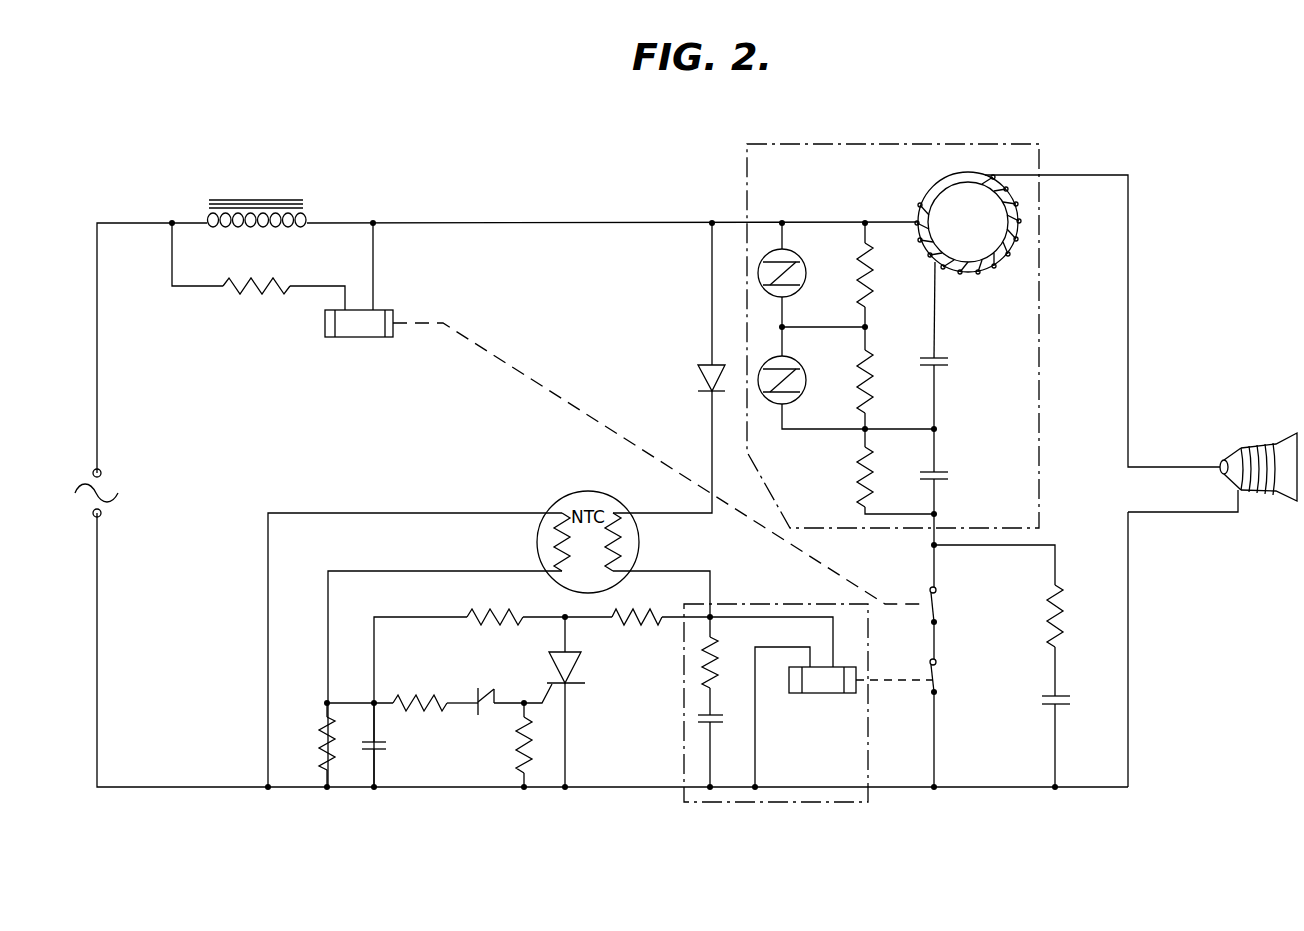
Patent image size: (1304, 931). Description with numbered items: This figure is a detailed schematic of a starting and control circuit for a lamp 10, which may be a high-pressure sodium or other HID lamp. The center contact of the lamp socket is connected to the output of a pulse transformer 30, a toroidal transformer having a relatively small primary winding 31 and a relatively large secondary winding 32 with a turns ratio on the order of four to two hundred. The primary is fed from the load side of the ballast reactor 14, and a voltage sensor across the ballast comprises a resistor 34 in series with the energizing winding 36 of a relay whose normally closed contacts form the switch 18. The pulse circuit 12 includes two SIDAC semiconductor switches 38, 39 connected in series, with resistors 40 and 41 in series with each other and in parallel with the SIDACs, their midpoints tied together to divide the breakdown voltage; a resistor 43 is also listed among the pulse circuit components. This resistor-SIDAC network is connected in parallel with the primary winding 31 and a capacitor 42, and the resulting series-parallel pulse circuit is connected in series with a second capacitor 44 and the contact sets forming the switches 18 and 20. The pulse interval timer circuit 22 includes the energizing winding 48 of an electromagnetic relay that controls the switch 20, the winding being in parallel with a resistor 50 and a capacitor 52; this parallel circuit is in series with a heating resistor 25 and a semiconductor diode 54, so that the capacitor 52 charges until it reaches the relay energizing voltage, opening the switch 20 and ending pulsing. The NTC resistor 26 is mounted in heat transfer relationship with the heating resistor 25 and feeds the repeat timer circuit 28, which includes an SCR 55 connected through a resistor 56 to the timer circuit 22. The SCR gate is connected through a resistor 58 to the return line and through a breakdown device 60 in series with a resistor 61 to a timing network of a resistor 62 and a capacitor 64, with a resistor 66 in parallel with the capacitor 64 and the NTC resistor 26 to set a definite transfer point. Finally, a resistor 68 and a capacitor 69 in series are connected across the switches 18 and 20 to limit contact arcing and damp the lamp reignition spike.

The lamp 10 is at (1275, 506).
The pulse circuit 12 is at (1042, 322).
The ballast reactor 14 is at (312, 213).
The switch 18 is at (946, 603).
The switch 20 is at (946, 673).
The pulse interval timer circuit 22 is at (712, 805).
The heating resistor 25 is at (622, 540).
The NTC resistor 26 is at (556, 550).
The repeat timer circuit 28 is at (300, 497).
The pulse transformer 30 is at (974, 214).
The primary winding 31 is at (935, 228).
The secondary winding 32 is at (1020, 248).
The resistor 34 is at (262, 292).
The energizing winding 36 is at (343, 338).
The semiconductor switch 38 is at (800, 262).
The semiconductor switch 39 is at (800, 369).
The resistor 40 is at (875, 288).
The resistor 41 is at (875, 383).
The capacitor 42 is at (947, 355).
The resistor 43 is at (857, 483).
The second capacitor 44 is at (947, 470).
The energizing winding 48 is at (820, 696).
The resistor 50 is at (722, 645).
The capacitor 52 is at (716, 725).
The semiconductor diode 54 is at (698, 378).
The SCR 55 is at (576, 664).
The resistor 56 is at (646, 626).
The resistor 58 is at (512, 740).
The breakdown device 60 is at (488, 690).
The resistor 61 is at (420, 695).
The resistor 62 is at (472, 612).
The capacitor 64 is at (388, 745).
The resistor 66 is at (320, 742).
The resistor 68 is at (1064, 605).
The capacitor 69 is at (1066, 694).